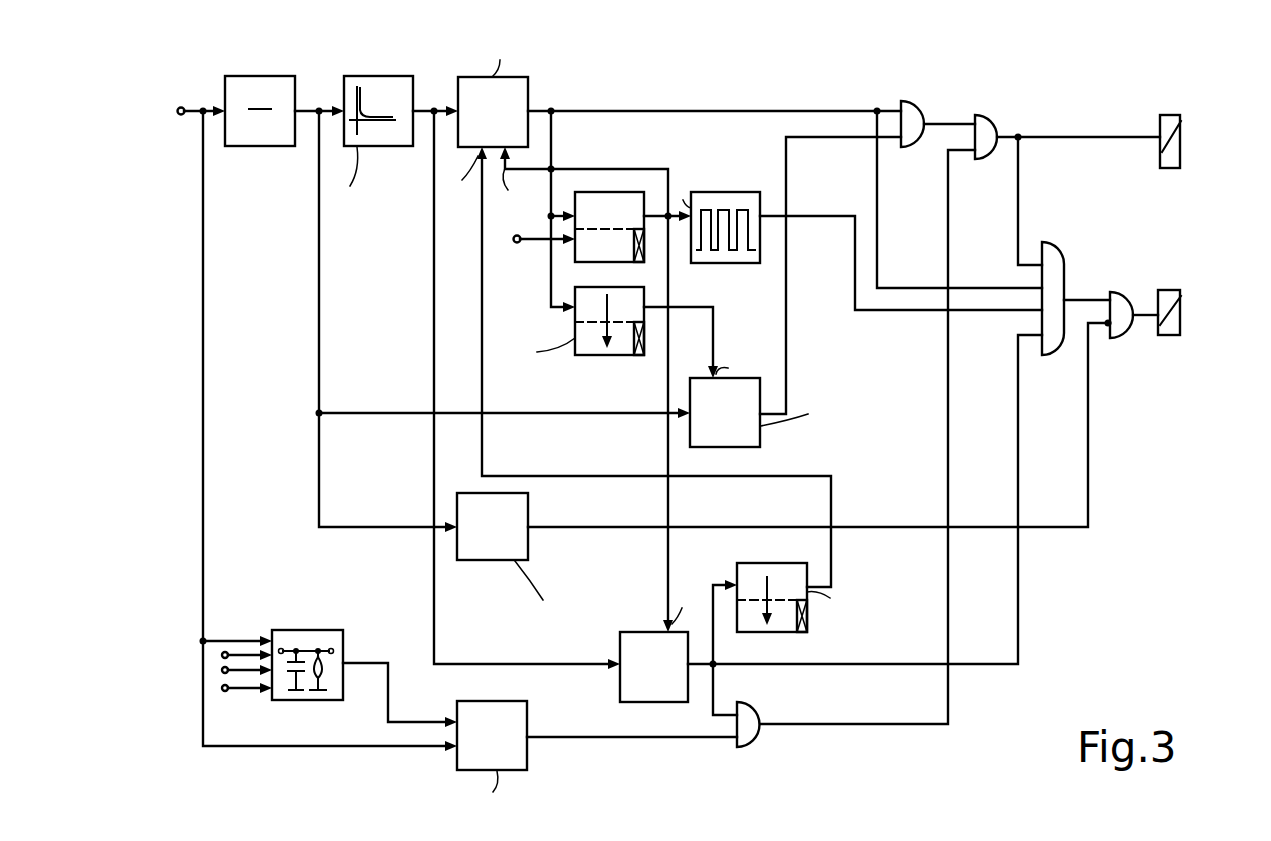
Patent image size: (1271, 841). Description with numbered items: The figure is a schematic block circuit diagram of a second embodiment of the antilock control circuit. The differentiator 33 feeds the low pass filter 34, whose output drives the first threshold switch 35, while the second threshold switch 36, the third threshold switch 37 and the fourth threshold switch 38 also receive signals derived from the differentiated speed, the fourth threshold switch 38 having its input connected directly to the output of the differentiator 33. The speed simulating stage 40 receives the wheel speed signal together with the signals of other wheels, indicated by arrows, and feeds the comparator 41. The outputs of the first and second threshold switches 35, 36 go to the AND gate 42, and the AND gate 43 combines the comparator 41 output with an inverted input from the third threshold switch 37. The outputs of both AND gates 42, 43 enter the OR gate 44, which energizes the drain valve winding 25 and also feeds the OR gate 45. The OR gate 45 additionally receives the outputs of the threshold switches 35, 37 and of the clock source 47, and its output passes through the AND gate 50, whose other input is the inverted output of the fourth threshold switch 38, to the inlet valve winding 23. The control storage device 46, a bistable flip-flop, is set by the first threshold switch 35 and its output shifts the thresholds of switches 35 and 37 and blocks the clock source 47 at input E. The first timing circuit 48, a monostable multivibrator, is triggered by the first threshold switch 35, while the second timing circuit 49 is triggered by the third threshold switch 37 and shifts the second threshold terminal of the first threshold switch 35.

The winding of the inlet valve 23 is at (1173, 307).
The winding of the drain valve 25 is at (1175, 133).
The differentiator 33 is at (270, 147).
The second low pass filter 34 is at (388, 147).
The first threshold switch 35 is at (527, 108).
The second threshold switch 36 is at (762, 440).
The third threshold switch 37 is at (634, 638).
The fourth threshold switch 38 is at (493, 561).
The speed simulating stage 40 is at (316, 630).
The comparator 41 is at (527, 722).
The AND gate 42 is at (916, 114).
The AND gate 43 is at (753, 738).
The OR gate 44 is at (982, 117).
The OR gate 45 is at (1058, 256).
The control storage device 46 is at (613, 192).
The clock source 47 is at (738, 193).
The first timing circuit 48 is at (585, 356).
The second timing circuit 49 is at (780, 563).
The AND gate 50 is at (1120, 336).